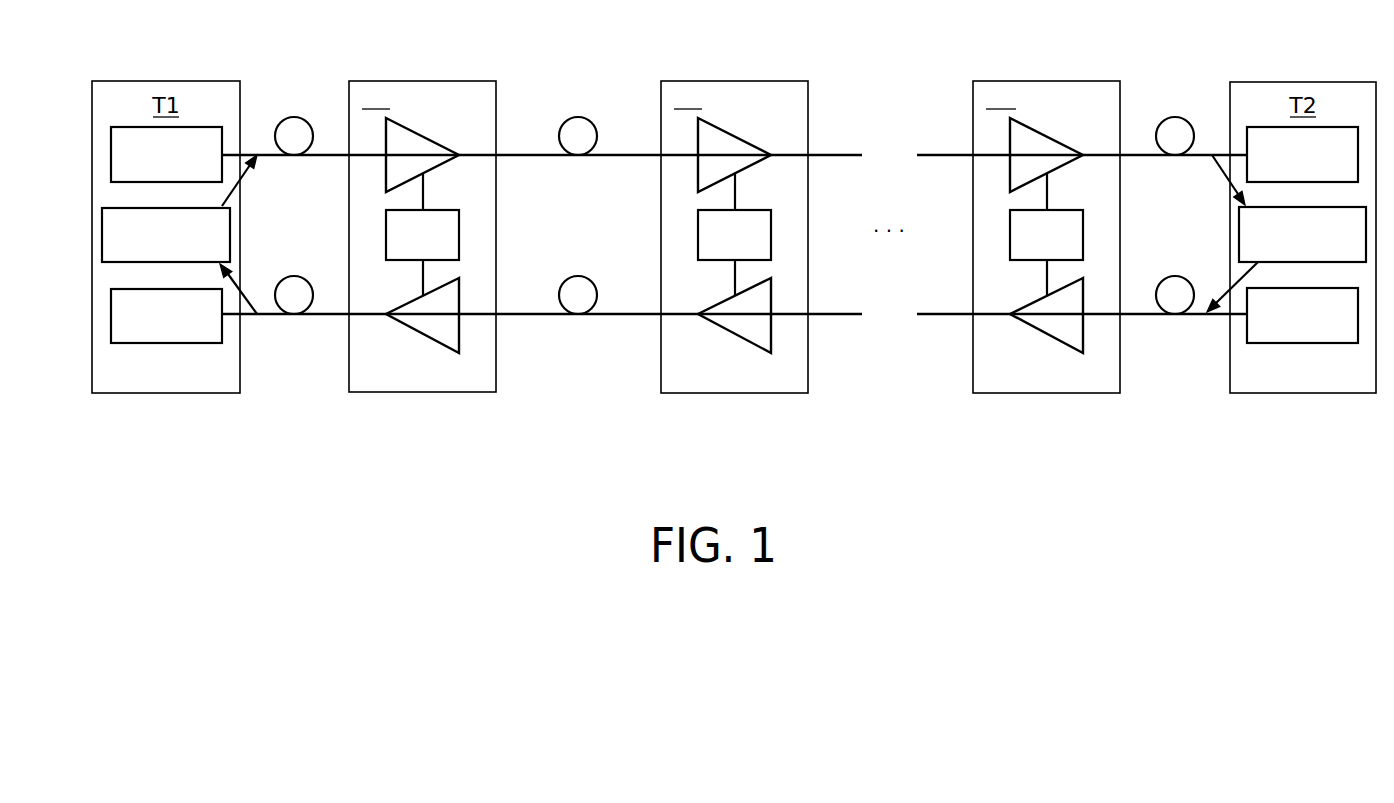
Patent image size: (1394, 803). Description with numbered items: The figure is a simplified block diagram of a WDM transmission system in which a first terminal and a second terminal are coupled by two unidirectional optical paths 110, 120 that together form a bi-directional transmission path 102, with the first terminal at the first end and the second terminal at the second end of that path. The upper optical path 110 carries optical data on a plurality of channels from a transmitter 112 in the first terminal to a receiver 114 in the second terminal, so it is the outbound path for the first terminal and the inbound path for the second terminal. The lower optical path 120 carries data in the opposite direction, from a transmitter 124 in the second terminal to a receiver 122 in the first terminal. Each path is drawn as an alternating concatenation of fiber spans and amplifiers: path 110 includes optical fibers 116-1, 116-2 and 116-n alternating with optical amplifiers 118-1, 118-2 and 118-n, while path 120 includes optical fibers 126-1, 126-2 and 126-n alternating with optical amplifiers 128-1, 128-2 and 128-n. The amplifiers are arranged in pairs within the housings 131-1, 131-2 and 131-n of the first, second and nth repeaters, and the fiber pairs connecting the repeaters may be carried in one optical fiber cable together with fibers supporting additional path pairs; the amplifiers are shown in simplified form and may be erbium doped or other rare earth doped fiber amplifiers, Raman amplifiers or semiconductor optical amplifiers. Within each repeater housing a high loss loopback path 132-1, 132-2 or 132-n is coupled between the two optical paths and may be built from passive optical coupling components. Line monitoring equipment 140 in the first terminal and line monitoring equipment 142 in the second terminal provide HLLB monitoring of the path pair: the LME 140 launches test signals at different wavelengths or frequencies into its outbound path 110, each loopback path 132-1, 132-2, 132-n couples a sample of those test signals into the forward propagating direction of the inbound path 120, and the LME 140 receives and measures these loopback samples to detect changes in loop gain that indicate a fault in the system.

The bi-directional transmission path 102 is at (829, 433).
The optical path 110 is at (570, 92).
The optical path 120 is at (554, 373).
The transmitter 112 is at (150, 177).
The receiver 114 is at (1286, 177).
The receiver 122 is at (150, 339).
The transmitter 124 is at (1286, 339).
The line monitoring equipment 140 is at (150, 258).
The line monitoring equipment 142 is at (1286, 258).
The optical fiber 116-1 is at (277, 156).
The optical fiber 116-2 is at (513, 156).
The optical fiber 116-n is at (1132, 156).
The optical fiber 126-1 is at (275, 315).
The optical fiber 126-2 is at (520, 315).
The optical fiber 126-n is at (1135, 315).
The housing 131-1 is at (443, 81).
The housing 131-2 is at (772, 81).
The housing 131-n is at (1070, 81).
The optical amplifier 118-1 is at (437, 164).
The optical amplifier 118-2 is at (749, 164).
The optical amplifier 118-n is at (1062, 164).
The optical amplifier 128-1 is at (457, 326).
The optical amplifier 128-2 is at (769, 326).
The optical amplifier 128-n is at (1082, 326).
The HLLB path 132-1 is at (447, 249).
The HLLB path 132-2 is at (759, 249).
The HLLB path 132-n is at (1021, 249).